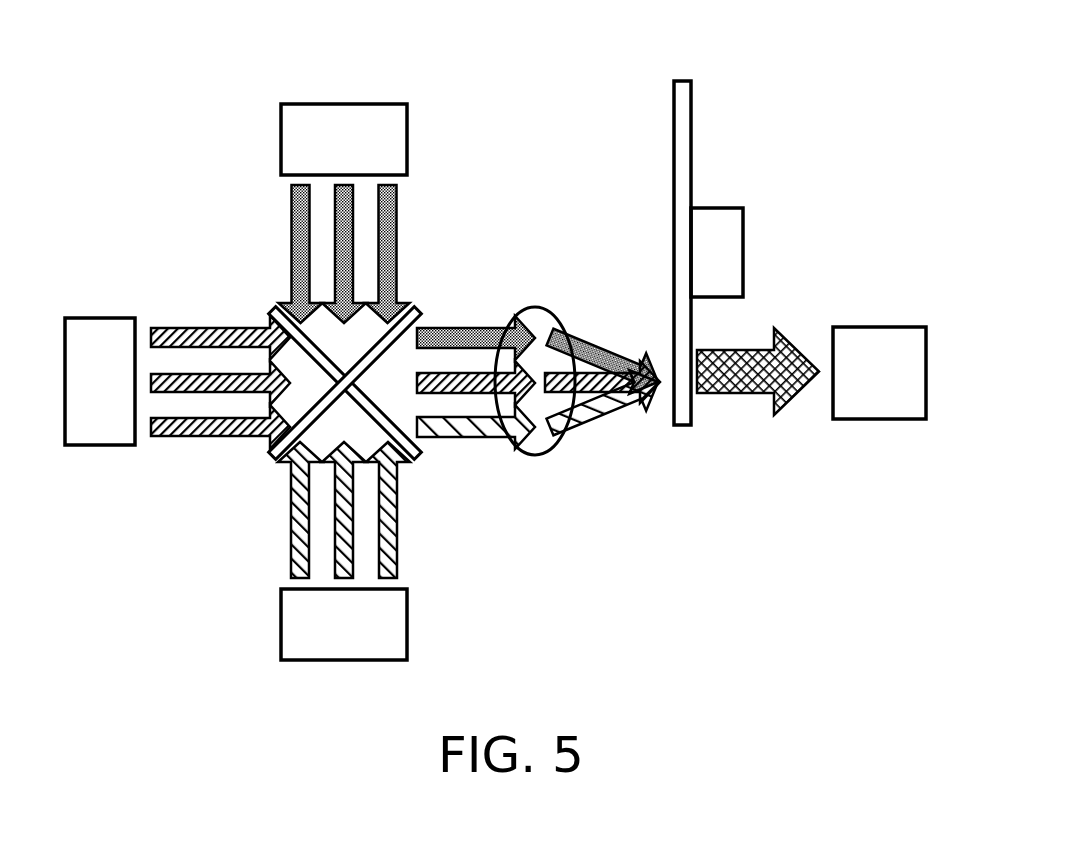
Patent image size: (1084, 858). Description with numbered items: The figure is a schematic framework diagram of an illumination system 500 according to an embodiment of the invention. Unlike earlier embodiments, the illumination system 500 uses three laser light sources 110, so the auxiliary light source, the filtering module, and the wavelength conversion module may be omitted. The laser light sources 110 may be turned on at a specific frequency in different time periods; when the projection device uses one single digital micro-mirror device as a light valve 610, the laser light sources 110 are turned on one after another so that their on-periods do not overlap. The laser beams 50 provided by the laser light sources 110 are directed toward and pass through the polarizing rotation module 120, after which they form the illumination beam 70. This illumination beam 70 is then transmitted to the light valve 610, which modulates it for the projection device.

The illumination system 500 is at (815, 659).
The laser light source 110 is at (345, 112).
The laser beam 50 is at (205, 330).
The polarizing rotation module 120 is at (742, 136).
The illumination beam 70 is at (731, 394).
The light valve 610 is at (883, 407).